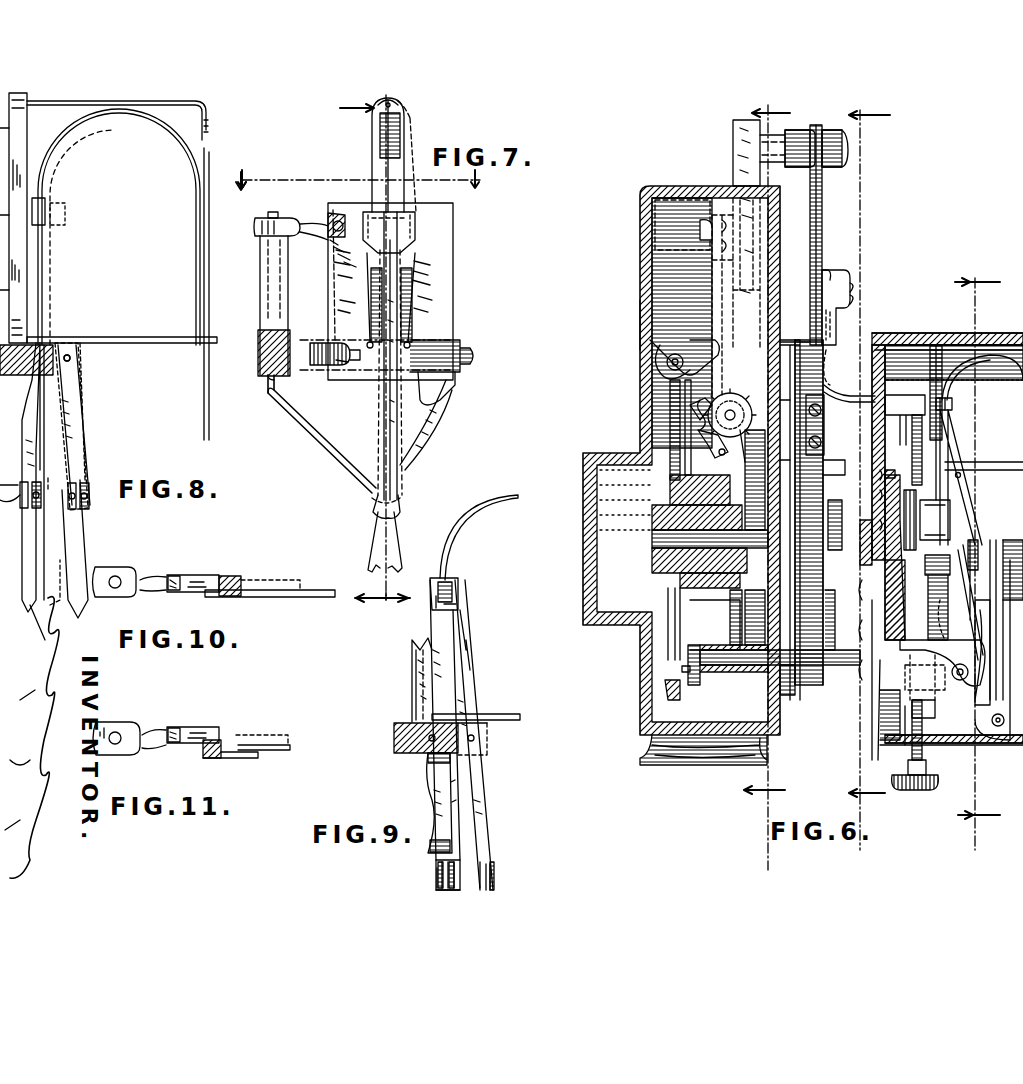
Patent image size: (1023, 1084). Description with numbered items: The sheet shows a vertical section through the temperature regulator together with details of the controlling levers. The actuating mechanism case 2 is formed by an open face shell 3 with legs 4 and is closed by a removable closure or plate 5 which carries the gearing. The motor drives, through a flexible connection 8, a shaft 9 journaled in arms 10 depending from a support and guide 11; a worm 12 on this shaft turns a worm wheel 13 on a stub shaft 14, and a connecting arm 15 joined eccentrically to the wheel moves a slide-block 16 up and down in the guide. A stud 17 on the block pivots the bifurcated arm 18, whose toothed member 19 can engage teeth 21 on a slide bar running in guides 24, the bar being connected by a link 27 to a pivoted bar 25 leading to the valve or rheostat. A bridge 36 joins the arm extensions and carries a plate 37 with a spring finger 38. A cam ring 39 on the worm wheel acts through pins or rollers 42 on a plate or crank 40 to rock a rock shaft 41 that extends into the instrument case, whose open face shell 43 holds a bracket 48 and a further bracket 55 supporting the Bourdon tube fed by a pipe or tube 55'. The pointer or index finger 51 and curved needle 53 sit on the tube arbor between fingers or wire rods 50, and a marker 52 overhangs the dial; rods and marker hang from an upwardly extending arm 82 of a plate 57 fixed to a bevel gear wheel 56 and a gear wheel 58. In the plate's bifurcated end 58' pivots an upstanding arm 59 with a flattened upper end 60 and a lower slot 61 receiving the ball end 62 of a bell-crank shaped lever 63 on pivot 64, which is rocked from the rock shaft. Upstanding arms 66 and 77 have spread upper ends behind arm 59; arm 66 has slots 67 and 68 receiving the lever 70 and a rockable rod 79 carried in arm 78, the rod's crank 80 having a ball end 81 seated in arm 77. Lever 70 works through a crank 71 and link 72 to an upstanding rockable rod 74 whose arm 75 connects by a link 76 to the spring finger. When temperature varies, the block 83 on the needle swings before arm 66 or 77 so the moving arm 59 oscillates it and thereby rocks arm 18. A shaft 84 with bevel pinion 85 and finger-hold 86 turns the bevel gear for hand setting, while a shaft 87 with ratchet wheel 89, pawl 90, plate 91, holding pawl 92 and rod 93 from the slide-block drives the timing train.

In FIG. 6, the actuating mechanism case 2 is at (658, 186).
In FIG. 6, the open face shell 3 is at (612, 328).
In FIG. 6, the legs 4 is at (618, 760).
In FIG. 6, the closure or plate 5 is at (775, 250).
In FIG. 7, the flexible connection 8 is at (361, 362).
In FIG. 6, the shaft 9 is at (672, 362).
In FIG. 8, the arms 10 is at (0, 575).
In FIG. 7, the arms 10 is at (368, 182).
In FIG. 6, the arms 10 is at (690, 352).
In FIG. 6, the support and guide 11 is at (735, 305).
In FIG. 6, the worm 12 is at (700, 358).
In FIG. 6, the worm wheel 13 is at (668, 692).
In FIG. 6, the stub shaft 14 is at (650, 548).
In FIG. 6, the connecting arm 15 is at (700, 298).
In FIG. 6, the slide-block 16 is at (740, 160).
In FIG. 6, the stud 17 is at (770, 142).
In FIG. 6, the bifurcated arm 18 is at (826, 188).
In FIG. 6, the toothed member 19 is at (815, 445).
In FIG. 6, the teeth 21 is at (822, 596).
In FIG. 6, the guides 24 is at (785, 345).
In FIG. 6, the bar 25 is at (828, 510).
In FIG. 6, the link 27 is at (830, 630).
In FIG. 6, the bridge 36 is at (826, 270).
In FIG. 6, the plate 37 is at (840, 282).
In FIG. 6, the spring finger 38 is at (838, 330).
In FIG. 6, the cam ring 39 is at (680, 622).
In FIG. 6, the plate or crank 40 is at (698, 686).
In FIG. 6, the rock shaft 41 is at (820, 668).
In FIG. 6, the pins or rollers 42 is at (686, 668).
In FIG. 6, the open face shell 43 is at (910, 333).
In FIG. 6, the bracket 48 is at (968, 735).
In FIG. 8, the fingers or wire rods 50 is at (128, 338).
In FIG. 7, the fingers or wire rods 50 is at (368, 345).
In FIG. 9, the fingers or wire rods 50 is at (502, 718).
In FIG. 6, the fingers or wire rods 50 is at (978, 460).
In FIG. 8, the pointer or index finger 51 is at (212, 165).
In FIG. 8, the marker 52 is at (210, 112).
In FIG. 7, the marker 52 is at (404, 108).
In FIG. 8, the curved needle 53 is at (165, 122).
In FIG. 9, the curved needle 53 is at (510, 507).
In FIG. 6, the curved needle 53 is at (982, 377).
In FIG. 6, the bracket 55 is at (982, 650).
In FIG. 6, the pipe or tube 55' is at (993, 751).
In FIG. 6, the bevel gear wheel 56 is at (902, 518).
In FIG. 7, the plate 57 is at (460, 350).
In FIG. 9, the plate 57 is at (400, 745).
In FIG. 6, the plate 57 is at (880, 520).
In FIG. 6, the gear wheel 58 is at (868, 594).
In FIG. 8, the bifurcated end 58' is at (91, 357).
In FIG. 7, the bifurcated end 58' is at (461, 421).
In FIG. 9, the bifurcated end 58' is at (501, 739).
In FIG. 6, the bifurcated end 58' is at (979, 475).
In FIG. 8, the upstanding arm 59 is at (82, 402).
In FIG. 7, the upstanding arm 59 is at (380, 410).
In FIG. 9, the upstanding arm 59 is at (478, 663).
In FIG. 6, the upstanding arm 59 is at (952, 432).
In FIG. 7, the flattened upper end 60 is at (415, 242).
In FIG. 9, the flattened upper end 60 is at (462, 598).
In FIG. 8, the slot 61 is at (82, 470).
In FIG. 9, the slot 61 is at (497, 875).
In FIG. 6, the slot 61 is at (972, 540).
In FIG. 8, the ball end 62 is at (90, 480).
In FIG. 7, the ball end 62 is at (398, 505).
In FIG. 6, the ball end 62 is at (970, 560).
In FIG. 8, the bell-crank shaped lever 63 is at (82, 552).
In FIG. 6, the bell-crank shaped lever 63 is at (965, 620).
In FIG. 6, the pivot 64 is at (968, 672).
In FIG. 7, the upstanding arm 66 is at (440, 292).
In FIG. 9, the upstanding arm 66 is at (460, 632).
In FIG. 10, the upstanding arm 66 is at (292, 596).
In FIG. 11, the upstanding arm 66 is at (278, 742).
In FIG. 9, the slot 67 is at (435, 888).
In FIG. 9, the slot 68 is at (438, 870).
In FIG. 6, the lever 70 is at (940, 600).
In FIG. 6, the crank 71 is at (910, 710).
In FIG. 6, the link 72 is at (880, 725).
In FIG. 6, the rockable rod 74 is at (915, 432).
In FIG. 6, the arm 75 is at (842, 395).
In FIG. 6, the link 76 is at (830, 372).
In FIG. 7, the upstanding arm 77 is at (345, 262).
In FIG. 10, the upstanding arm 77 is at (208, 580).
In FIG. 11, the upstanding arm 77 is at (204, 738).
In FIG. 7, the arm 78 is at (262, 282).
In FIG. 7, the rockable rod 79 is at (352, 464).
In FIG. 7, the crank 80 is at (258, 236).
In FIG. 10, the crank 80 is at (132, 580).
In FIG. 11, the crank 80 is at (128, 735).
In FIG. 6, the crank 80 is at (955, 405).
In FIG. 7, the ball end 81 is at (332, 238).
In FIG. 10, the ball end 81 is at (178, 578).
In FIG. 11, the ball end 81 is at (178, 745).
In FIG. 7, the upwardly extending arm 82 is at (375, 176).
In FIG. 9, the upwardly extending arm 82 is at (412, 678).
In FIG. 6, the upwardly extending arm 82 is at (960, 335).
In FIG. 7, the block 83 is at (410, 208).
In FIG. 9, the block 83 is at (456, 584).
In FIG. 10, the block 83 is at (240, 585).
In FIG. 11, the block 83 is at (226, 745).
In FIG. 6, the shaft 84 is at (924, 720).
In FIG. 6, the bevel pinion 85 is at (949, 613).
In FIG. 6, the finger-hold 86 is at (918, 788).
In FIG. 6, the shaft 87 is at (730, 415).
In FIG. 6, the ratchet wheel 89 is at (708, 400).
In FIG. 6, the ratchet pawl 90 is at (706, 450).
In FIG. 6, the plate 91 is at (700, 415).
In FIG. 6, the pawl 92 is at (742, 454).
In FIG. 6, the rod 93 is at (690, 262).